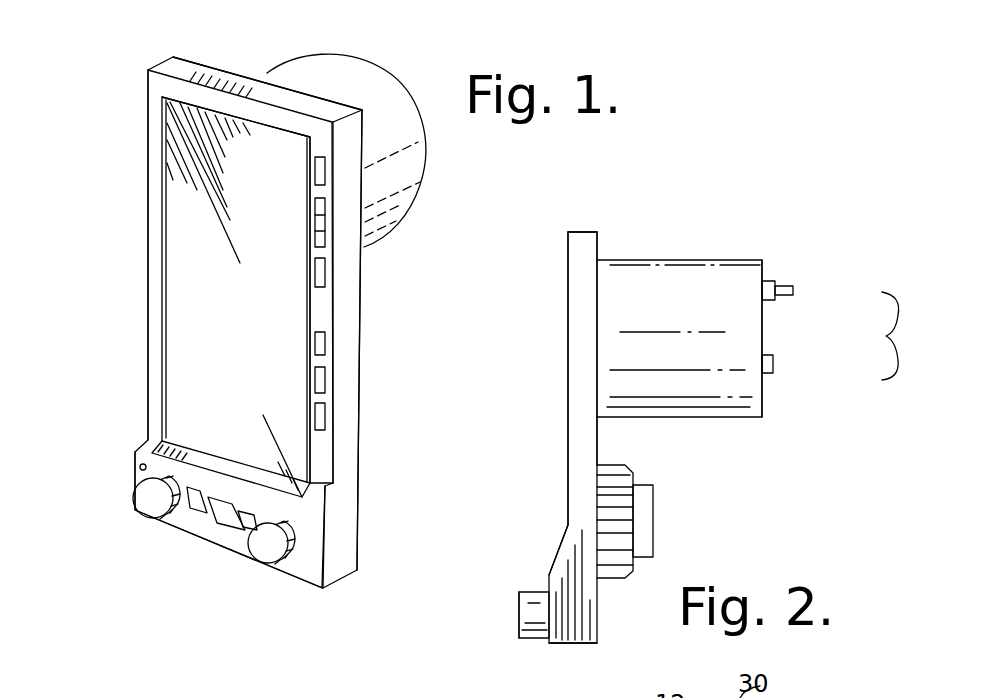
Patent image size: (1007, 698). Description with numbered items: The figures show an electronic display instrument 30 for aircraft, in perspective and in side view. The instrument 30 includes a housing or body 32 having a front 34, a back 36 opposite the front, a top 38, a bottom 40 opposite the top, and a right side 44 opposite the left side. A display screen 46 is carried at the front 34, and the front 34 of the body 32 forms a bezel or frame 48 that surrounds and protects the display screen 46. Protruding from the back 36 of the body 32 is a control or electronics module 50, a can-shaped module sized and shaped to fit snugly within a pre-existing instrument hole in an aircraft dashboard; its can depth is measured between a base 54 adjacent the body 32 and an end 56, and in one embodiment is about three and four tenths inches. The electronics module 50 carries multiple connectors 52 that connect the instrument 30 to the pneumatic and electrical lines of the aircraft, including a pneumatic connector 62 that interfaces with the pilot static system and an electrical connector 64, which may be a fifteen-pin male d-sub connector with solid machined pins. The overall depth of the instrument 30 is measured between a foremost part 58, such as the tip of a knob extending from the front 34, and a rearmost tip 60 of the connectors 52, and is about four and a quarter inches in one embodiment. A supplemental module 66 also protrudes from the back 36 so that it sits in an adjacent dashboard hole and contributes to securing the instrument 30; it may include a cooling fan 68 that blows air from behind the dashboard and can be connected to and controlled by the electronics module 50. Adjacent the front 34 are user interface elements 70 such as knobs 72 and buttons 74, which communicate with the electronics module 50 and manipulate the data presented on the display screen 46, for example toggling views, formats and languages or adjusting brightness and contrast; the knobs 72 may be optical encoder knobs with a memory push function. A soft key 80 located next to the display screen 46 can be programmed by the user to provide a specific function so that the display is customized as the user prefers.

In FIG. 1, the electronic display instrument 30 is at (96, 133).
In FIG. 2, the electronic display instrument 30 is at (680, 184).
In FIG. 1, the housing or body 32 is at (350, 358).
In FIG. 2, the housing or body 32 is at (578, 252).
In FIG. 1, the front 34 is at (200, 312).
In FIG. 2, the front 34 is at (562, 408).
In FIG. 2, the back 36 is at (604, 432).
In FIG. 1, the top 38 is at (243, 80).
In FIG. 2, the top 38 is at (586, 229).
In FIG. 2, the bottom 40 is at (573, 648).
In FIG. 1, the right side 44 is at (345, 455).
In FIG. 2, the right side 44 is at (580, 490).
In FIG. 1, the display screen 46 is at (275, 295).
In FIG. 1, the bezel or frame 48 is at (148, 392).
In FIG. 1, the control or electronics module 50 is at (357, 68).
In FIG. 2, the control or electronics module 50 is at (700, 278).
In FIG. 2, the connectors 52 is at (911, 336).
In FIG. 2, the base 54 is at (603, 247).
In FIG. 2, the end 56 is at (768, 398).
In FIG. 2, the foremost part 58 is at (514, 624).
In FIG. 2, the rearmost tip 60 is at (799, 290).
In FIG. 2, the pneumatic connector 62 is at (784, 298).
In FIG. 2, the electrical connector 64 is at (778, 365).
In FIG. 2, the supplemental module 66 is at (653, 512).
In FIG. 2, the cooling fan 68 is at (630, 572).
In FIG. 1, the user interface elements 70 is at (245, 641).
In FIG. 1, the knobs 72 is at (153, 500).
In FIG. 2, the knobs 72 is at (532, 592).
In FIG. 1, the buttons 74 is at (322, 417).
In FIG. 1, the soft key 80 is at (320, 272).